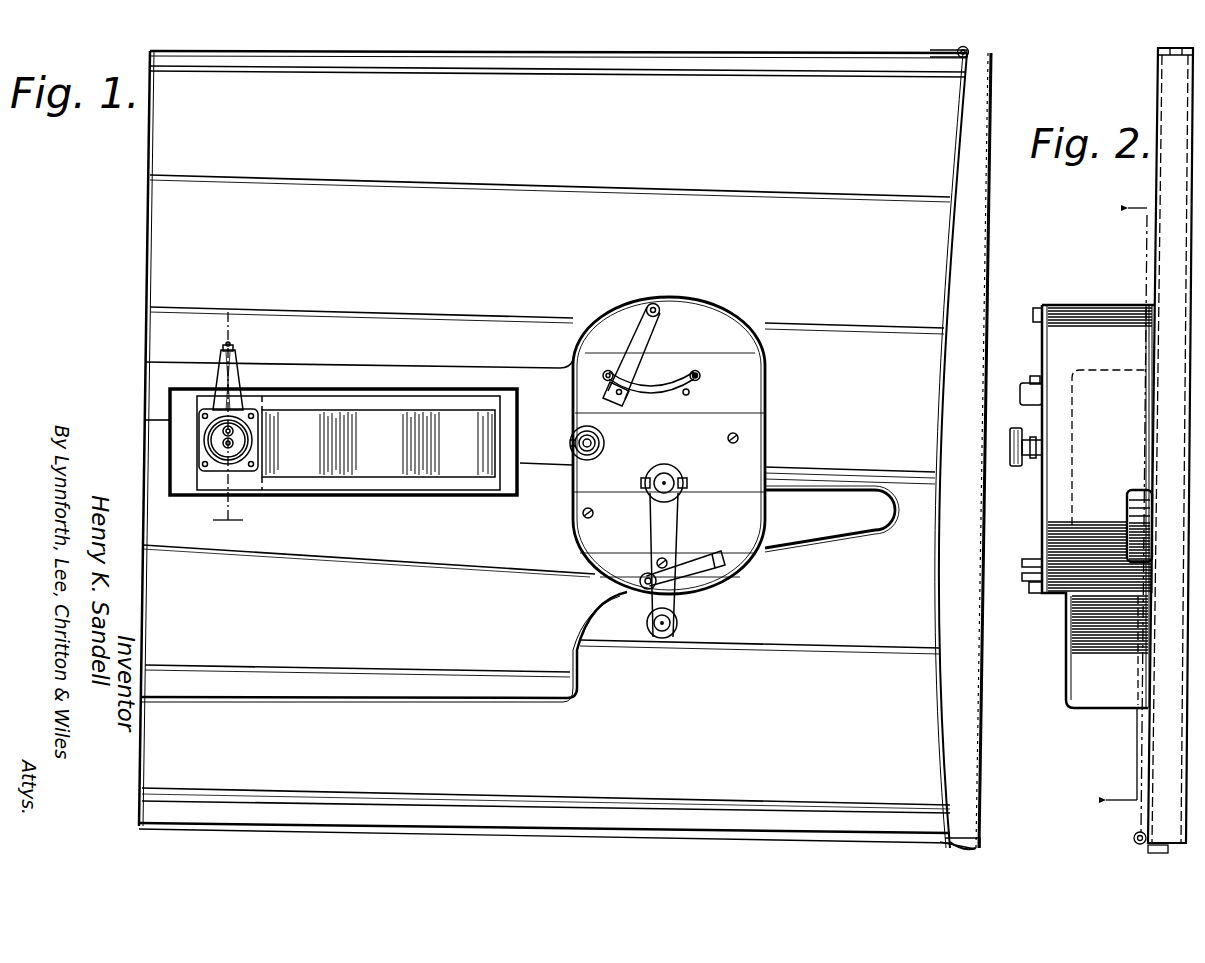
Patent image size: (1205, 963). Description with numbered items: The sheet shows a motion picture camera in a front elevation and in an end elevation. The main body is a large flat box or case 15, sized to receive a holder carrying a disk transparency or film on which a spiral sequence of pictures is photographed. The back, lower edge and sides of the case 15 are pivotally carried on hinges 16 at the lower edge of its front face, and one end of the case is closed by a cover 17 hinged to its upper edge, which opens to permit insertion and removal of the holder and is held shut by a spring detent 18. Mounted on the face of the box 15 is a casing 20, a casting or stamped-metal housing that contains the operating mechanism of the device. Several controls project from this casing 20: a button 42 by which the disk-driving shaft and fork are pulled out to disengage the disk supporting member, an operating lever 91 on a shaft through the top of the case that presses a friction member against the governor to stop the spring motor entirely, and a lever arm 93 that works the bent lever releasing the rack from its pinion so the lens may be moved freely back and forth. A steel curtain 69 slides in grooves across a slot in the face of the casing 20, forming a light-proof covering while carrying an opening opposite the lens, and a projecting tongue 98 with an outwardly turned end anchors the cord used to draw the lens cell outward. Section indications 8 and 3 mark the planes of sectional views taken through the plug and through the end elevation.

In FIG. 1, the box or case 15 is at (235, 212).
In FIG. 1, the cover 17 is at (972, 244).
In FIG. 2, the cover 17 is at (1170, 433).
In FIG. 1, the spring detent 18 is at (972, 50).
In FIG. 2, the spring detent 18 is at (1170, 851).
In FIG. 1, the casing 20 is at (736, 324).
In FIG. 2, the casing 20 is at (1073, 313).
In FIG. 1, the operating lever 91 is at (641, 327).
In FIG. 2, the operating lever 91 is at (1040, 333).
In FIG. 1, the button 42 is at (604, 440).
In FIG. 2, the button 42 is at (1015, 467).
In FIG. 1, the lever arm 93 is at (696, 574).
In FIG. 2, the lever arm 93 is at (1030, 562).
In FIG. 1, the steel curtain 69 is at (343, 442).
In FIG. 1, the projecting tongue 98 is at (238, 382).
In FIG. 1, the section line 8- 8 is at (228, 419).
In FIG. 2, the hinges 16 is at (1134, 838).
In FIG. 2, the section line 3- 3 is at (1126, 516).